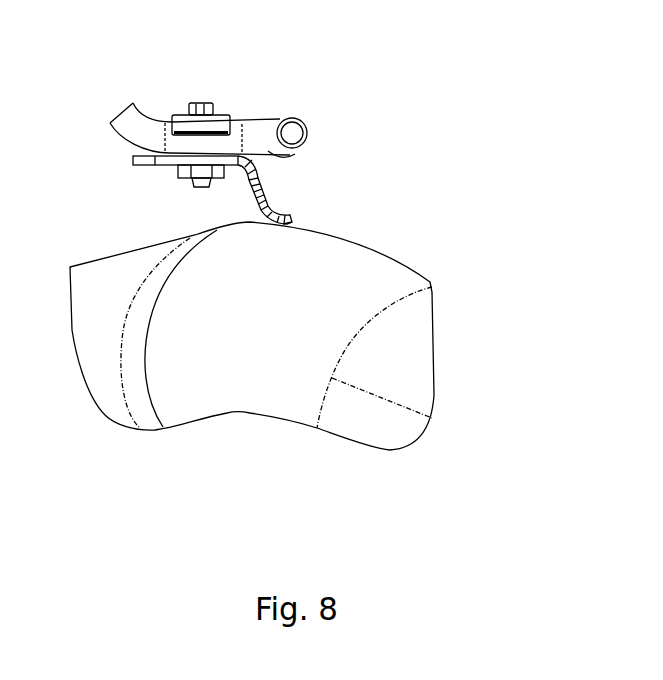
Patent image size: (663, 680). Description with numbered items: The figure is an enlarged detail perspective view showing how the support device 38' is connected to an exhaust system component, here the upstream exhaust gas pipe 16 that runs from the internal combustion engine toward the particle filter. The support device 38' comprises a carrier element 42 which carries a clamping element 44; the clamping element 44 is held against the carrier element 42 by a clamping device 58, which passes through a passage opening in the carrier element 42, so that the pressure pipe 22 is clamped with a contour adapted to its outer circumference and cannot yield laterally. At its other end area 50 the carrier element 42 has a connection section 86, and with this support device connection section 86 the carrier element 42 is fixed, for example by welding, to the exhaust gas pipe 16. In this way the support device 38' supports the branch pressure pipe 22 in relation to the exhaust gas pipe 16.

The upstream exhaust gas pipe 16 is at (418, 274).
The pressure pipe 22 is at (144, 117).
The support device 38' is at (233, 122).
The carrier element 42 is at (165, 166).
The clamping element 44 is at (218, 114).
The other end area 50 is at (255, 193).
The clamping device 58 is at (200, 97).
The connection section 86 is at (284, 210).